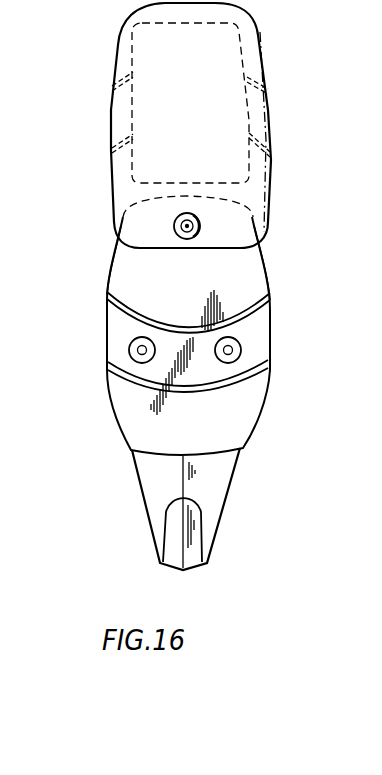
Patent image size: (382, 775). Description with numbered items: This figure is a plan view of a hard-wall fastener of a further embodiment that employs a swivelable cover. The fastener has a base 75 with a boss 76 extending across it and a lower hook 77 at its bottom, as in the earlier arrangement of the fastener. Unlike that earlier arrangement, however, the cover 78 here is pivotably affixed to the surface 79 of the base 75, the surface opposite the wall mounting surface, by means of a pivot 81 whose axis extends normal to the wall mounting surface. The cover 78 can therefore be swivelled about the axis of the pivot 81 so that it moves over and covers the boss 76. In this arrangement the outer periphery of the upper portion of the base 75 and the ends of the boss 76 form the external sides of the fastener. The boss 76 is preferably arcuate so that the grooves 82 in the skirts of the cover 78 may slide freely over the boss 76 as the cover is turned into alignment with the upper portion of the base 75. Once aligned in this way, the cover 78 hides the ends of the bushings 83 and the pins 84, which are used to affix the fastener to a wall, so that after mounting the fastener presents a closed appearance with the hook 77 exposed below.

The base 75 is at (243, 418).
The boss 76 is at (260, 338).
The lower hook 77 is at (197, 538).
The cover 78 is at (250, 43).
The surface of the base 79 is at (253, 248).
The pivot 81 is at (176, 227).
The grooves 82 is at (296, 120).
The bushings 83 is at (131, 341).
The pins 84 is at (129, 350).